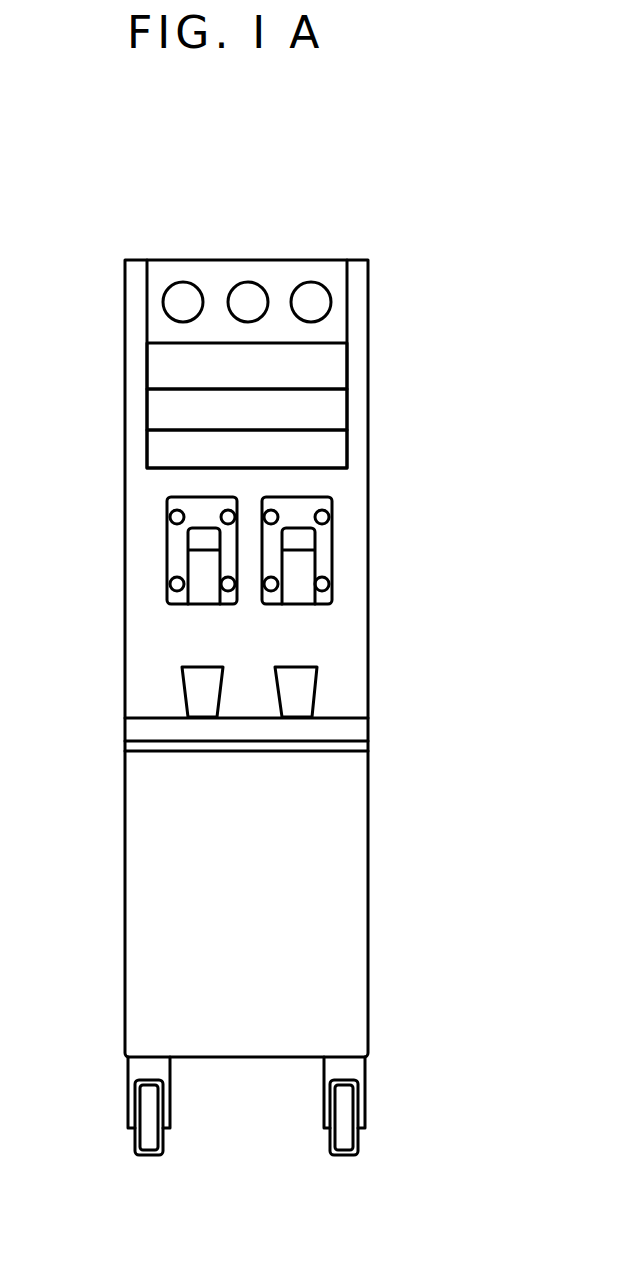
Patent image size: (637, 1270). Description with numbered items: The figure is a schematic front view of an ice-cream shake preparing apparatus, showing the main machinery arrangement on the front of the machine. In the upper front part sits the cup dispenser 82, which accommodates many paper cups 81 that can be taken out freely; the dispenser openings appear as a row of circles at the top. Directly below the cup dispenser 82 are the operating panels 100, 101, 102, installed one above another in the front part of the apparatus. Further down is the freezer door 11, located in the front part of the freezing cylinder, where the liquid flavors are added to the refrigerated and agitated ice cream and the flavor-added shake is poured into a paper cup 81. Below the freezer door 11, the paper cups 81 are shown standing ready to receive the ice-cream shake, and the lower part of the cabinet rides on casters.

The cup dispenser 82 is at (188, 281).
The operating panel 100 is at (347, 367).
The operating panel 101 is at (347, 413).
The operating panel 102 is at (347, 455).
The freezer door 11 is at (315, 550).
The paper cup 81 is at (316, 693).